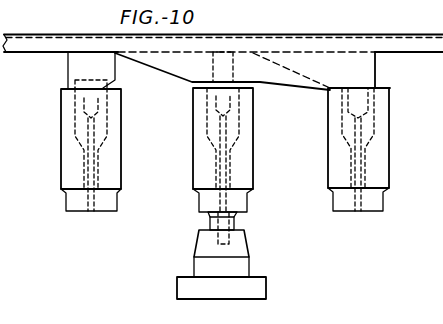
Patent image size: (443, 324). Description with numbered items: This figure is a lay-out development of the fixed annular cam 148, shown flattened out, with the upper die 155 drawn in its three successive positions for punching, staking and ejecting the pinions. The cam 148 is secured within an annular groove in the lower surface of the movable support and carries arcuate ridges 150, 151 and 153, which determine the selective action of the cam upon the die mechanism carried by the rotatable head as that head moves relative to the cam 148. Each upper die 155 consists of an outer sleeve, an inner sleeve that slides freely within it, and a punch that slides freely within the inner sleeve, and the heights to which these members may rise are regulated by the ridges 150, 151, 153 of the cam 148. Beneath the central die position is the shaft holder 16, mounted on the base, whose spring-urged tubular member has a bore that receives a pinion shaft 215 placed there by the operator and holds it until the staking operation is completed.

The fixed annular cam 148 is at (380, 57).
The arcuate ridge 150 is at (178, 68).
The arcuate ridge 151 is at (313, 77).
The arcuate ridge 153 is at (83, 68).
The upper die 155 is at (60, 150).
The pinion shaft 215 is at (232, 238).
The shaft holder 16 is at (269, 288).